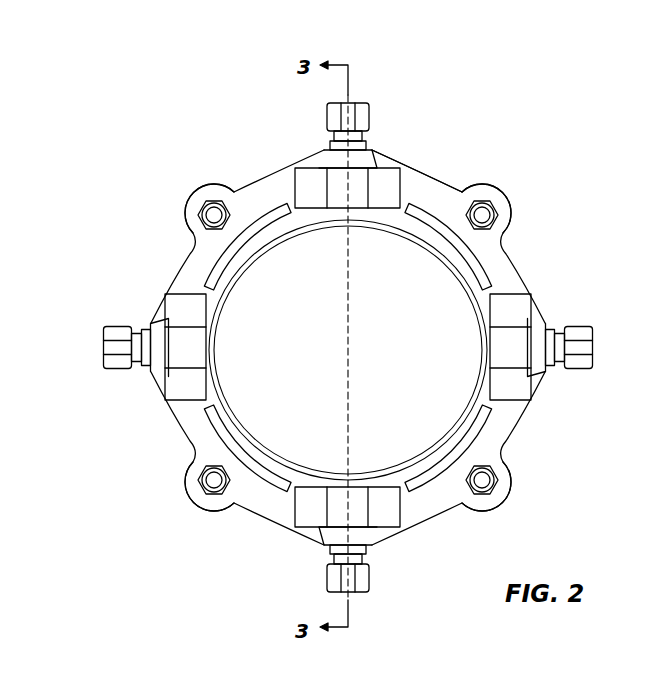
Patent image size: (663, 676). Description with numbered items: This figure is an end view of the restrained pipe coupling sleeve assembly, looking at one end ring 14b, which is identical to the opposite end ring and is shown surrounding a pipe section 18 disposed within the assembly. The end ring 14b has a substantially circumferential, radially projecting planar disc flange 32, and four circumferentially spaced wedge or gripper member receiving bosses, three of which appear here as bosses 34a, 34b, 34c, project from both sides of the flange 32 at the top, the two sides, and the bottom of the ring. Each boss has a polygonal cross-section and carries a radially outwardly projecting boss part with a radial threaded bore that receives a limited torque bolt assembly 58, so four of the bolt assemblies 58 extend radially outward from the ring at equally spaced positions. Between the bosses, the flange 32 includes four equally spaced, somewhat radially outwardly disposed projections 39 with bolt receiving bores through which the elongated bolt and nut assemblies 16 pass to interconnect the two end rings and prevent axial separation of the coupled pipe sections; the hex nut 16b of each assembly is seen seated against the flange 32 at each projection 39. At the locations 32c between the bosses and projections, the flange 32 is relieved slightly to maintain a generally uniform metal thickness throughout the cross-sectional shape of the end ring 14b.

The end ring 14b is at (431, 177).
The bolt and nut assemblies 16 is at (483, 216).
The hex nut 16b is at (505, 251).
The pipe section 18 is at (232, 412).
The flange portion 32 is at (427, 515).
The relieved locations 32c is at (456, 252).
The gripper member receiving boss 34a is at (337, 206).
The gripper member receiving boss 34b is at (200, 349).
The gripper member receiving boss 34c is at (357, 492).
The projections 39 is at (499, 214).
The limited torque bolt assembly 58 is at (371, 118).